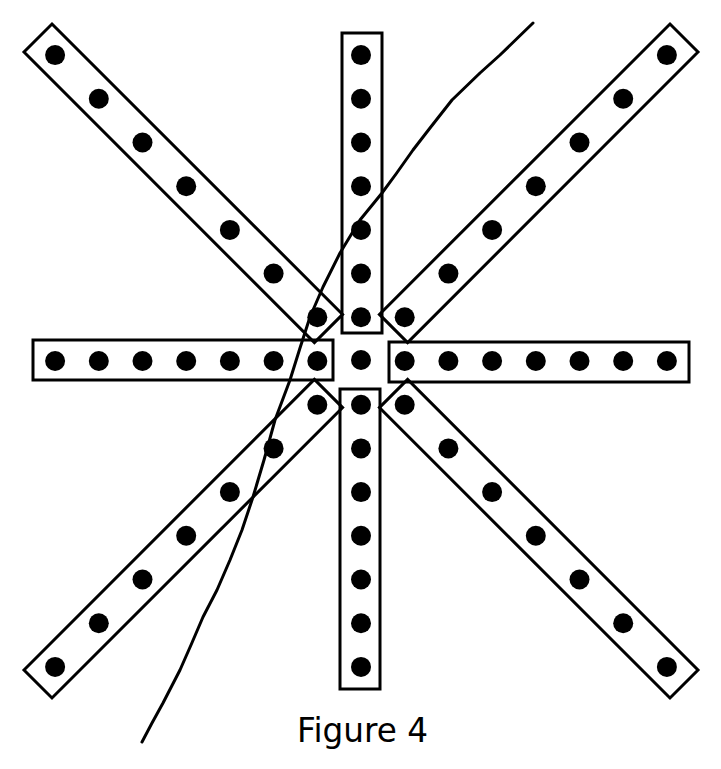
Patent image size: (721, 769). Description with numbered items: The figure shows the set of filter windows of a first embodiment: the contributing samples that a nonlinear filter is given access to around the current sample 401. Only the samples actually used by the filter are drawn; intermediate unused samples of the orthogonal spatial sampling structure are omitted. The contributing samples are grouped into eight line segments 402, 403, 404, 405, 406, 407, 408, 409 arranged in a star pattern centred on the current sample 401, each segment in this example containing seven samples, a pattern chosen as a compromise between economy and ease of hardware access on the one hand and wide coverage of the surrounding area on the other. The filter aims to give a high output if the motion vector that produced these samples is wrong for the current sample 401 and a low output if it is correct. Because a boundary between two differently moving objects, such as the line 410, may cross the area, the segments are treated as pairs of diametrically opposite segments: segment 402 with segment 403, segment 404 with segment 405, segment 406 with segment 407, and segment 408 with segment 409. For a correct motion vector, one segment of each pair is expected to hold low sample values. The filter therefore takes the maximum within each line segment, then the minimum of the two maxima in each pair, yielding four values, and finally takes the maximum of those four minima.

The current sample 401 is at (372, 350).
The line segment 402 is at (605, 387).
The line segment 403 is at (108, 338).
The line segment 404 is at (333, 107).
The line segment 405 is at (387, 612).
The line segment 406 is at (623, 138).
The line segment 407 is at (155, 530).
The line segment 408 is at (152, 110).
The line segment 409 is at (560, 520).
The line 410 is at (512, 53).